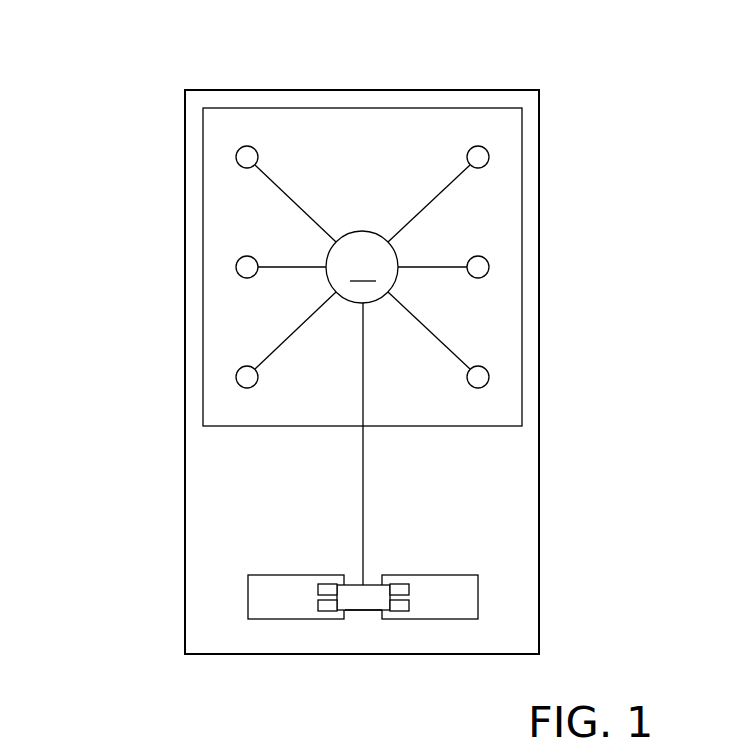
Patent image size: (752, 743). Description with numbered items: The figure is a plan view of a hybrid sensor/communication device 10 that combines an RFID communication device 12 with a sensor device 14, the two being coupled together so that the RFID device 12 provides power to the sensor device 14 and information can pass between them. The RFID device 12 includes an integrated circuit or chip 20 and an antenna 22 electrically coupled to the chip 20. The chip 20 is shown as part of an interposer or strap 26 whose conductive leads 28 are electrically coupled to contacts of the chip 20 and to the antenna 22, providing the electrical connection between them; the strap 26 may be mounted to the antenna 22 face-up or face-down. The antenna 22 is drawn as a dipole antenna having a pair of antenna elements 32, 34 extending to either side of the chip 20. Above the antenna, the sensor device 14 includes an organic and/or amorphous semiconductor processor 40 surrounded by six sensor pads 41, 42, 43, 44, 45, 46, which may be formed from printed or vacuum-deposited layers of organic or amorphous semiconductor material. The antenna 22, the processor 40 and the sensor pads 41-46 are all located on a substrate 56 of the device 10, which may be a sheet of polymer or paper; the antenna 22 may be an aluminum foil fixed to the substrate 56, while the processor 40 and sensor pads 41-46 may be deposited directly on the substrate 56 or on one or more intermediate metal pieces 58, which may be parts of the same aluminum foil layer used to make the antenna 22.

The hybrid sensor/communication device 10 is at (165, 68).
The RFID communication device 12 is at (367, 594).
The sensor device 14 is at (331, 87).
The chip 20 is at (365, 610).
The antenna 22 is at (268, 644).
The strap 26 is at (377, 629).
The conductive leads 28 is at (318, 606).
The antenna element 32 is at (248, 601).
The antenna element 34 is at (465, 607).
The organic and/or amorphous semiconductor processor 40 is at (362, 375).
The sensor pad 41 is at (243, 159).
The sensor pad 42 is at (242, 266).
The sensor pad 43 is at (242, 377).
The sensor pad 44 is at (485, 156).
The sensor pad 45 is at (486, 266).
The sensor pad 46 is at (486, 378).
The substrate 56 is at (513, 471).
The metal pieces 58 is at (402, 128).